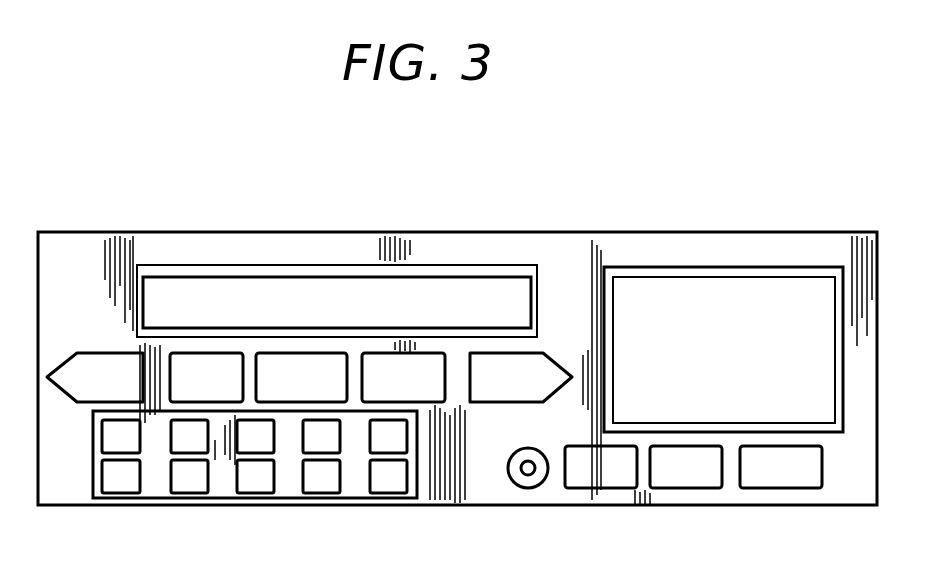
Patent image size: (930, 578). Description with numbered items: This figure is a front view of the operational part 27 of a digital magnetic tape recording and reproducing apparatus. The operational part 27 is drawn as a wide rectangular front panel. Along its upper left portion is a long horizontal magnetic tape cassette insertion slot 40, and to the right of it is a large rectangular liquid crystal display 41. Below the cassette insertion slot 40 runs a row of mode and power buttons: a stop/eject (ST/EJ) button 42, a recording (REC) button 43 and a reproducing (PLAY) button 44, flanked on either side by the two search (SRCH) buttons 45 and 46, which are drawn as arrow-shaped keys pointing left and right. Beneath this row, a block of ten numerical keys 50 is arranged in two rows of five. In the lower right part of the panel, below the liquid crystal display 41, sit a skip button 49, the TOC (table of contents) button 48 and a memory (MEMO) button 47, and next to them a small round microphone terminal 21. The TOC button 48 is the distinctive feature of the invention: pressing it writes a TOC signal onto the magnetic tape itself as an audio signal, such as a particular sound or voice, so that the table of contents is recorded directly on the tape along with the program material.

The operational part 27 is at (670, 250).
The magnetic tape cassette insertion slot 40 is at (253, 300).
The liquid crystal display 41 is at (802, 305).
The stop/eject (ST/EJ) button 42 is at (328, 350).
The recording (REC) button 43 is at (200, 350).
The reproducing (PLAY) button 44 is at (432, 350).
The search (SRCH) button 45 is at (93, 350).
The search (SRCH) button 46 is at (483, 404).
The memory (MEMO) button 47 is at (775, 490).
The TOC (table of contents) button 48 is at (686, 490).
The skip button 49 is at (603, 490).
The numerical keys 50 is at (155, 483).
The microphone terminal 21 is at (528, 488).